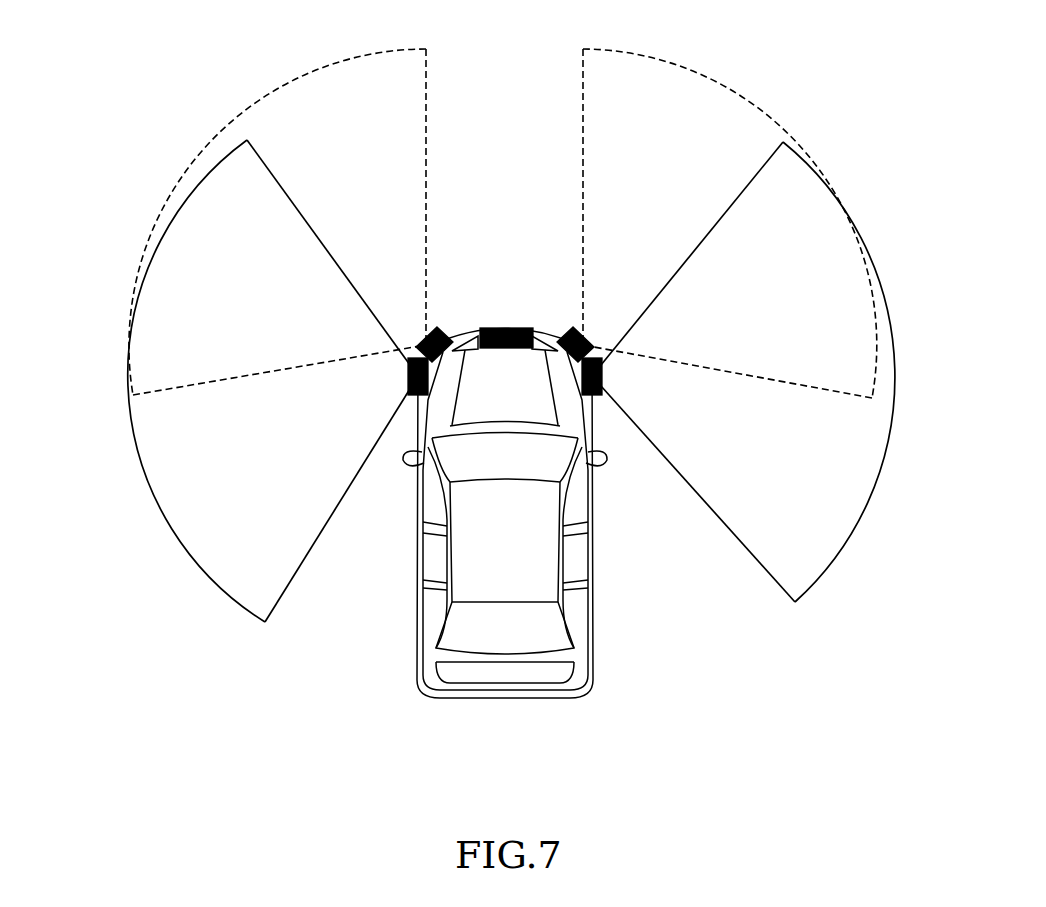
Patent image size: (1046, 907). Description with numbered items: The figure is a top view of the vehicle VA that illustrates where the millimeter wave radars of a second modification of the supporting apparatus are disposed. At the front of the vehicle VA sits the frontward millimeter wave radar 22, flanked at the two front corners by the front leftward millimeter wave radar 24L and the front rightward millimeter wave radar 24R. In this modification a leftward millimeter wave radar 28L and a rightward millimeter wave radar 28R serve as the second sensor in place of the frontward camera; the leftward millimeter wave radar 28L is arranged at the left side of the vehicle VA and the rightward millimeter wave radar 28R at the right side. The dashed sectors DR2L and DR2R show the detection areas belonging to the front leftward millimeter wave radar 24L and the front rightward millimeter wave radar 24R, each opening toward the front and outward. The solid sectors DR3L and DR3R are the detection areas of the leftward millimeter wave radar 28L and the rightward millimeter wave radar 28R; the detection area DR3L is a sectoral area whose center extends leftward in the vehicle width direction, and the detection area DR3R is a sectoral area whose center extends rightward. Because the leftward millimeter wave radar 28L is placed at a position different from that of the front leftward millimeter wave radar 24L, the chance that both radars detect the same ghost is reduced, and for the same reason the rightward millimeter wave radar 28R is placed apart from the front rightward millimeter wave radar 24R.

The frontward millimeter wave radar 22 is at (523, 328).
The front leftward millimeter wave radar 24L is at (442, 328).
The front rightward millimeter wave radar 24R is at (572, 328).
The leftward millimeter wave radar 28L is at (407, 397).
The rightward millimeter wave radar 28R is at (598, 397).
The detection area DR2L is at (347, 62).
The detection area DR2R is at (667, 62).
The detection area DR3L is at (167, 527).
The detection area DR3R is at (850, 538).
The vehicle VA is at (593, 563).